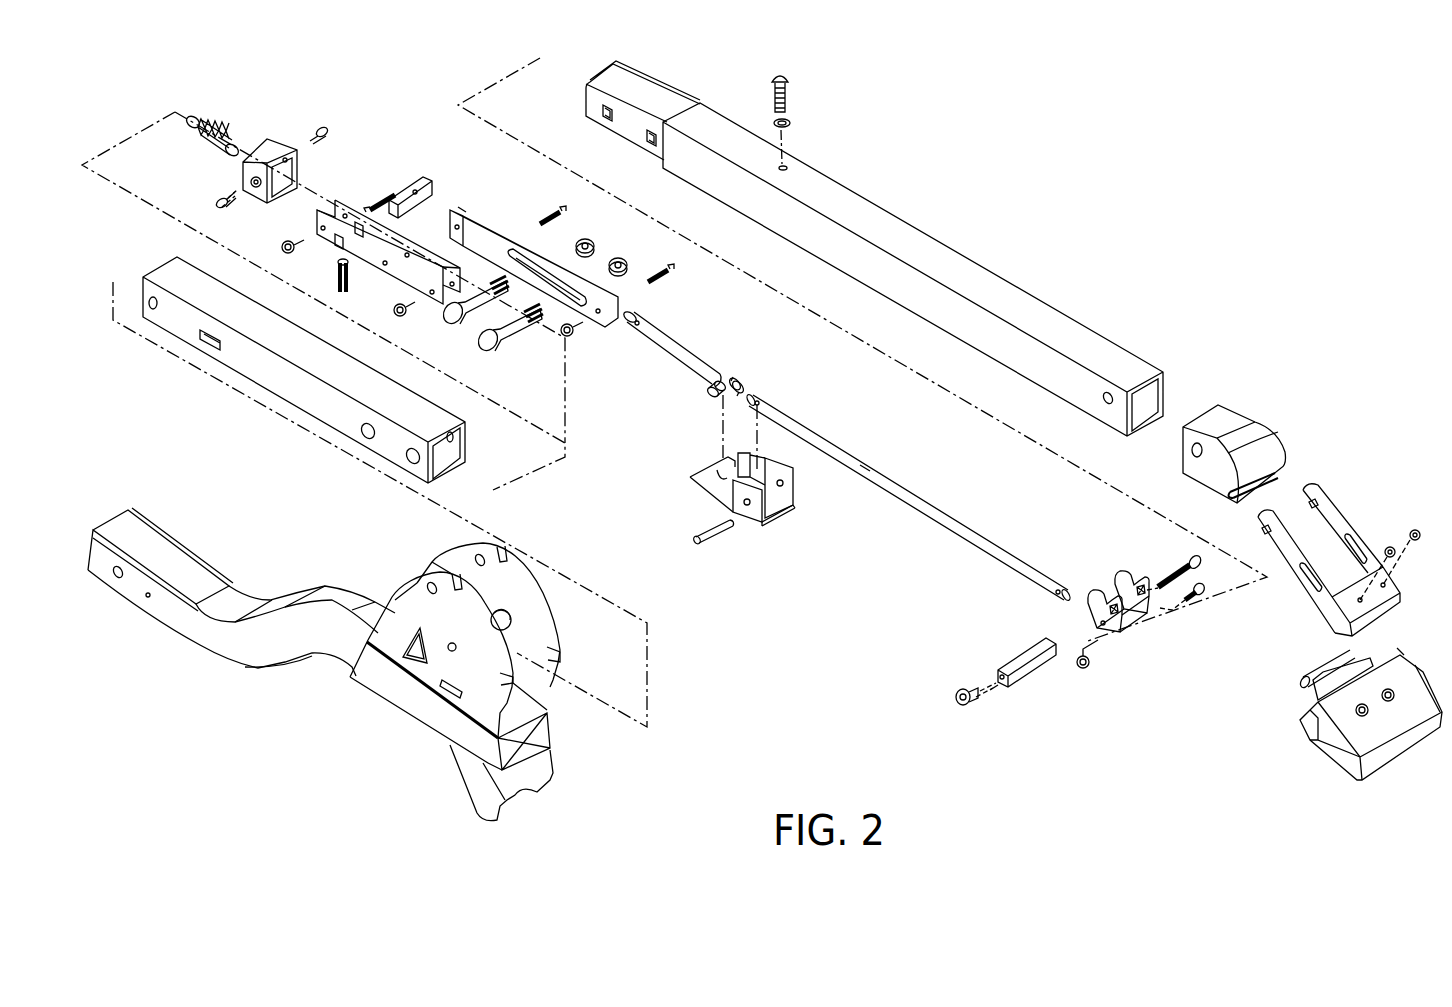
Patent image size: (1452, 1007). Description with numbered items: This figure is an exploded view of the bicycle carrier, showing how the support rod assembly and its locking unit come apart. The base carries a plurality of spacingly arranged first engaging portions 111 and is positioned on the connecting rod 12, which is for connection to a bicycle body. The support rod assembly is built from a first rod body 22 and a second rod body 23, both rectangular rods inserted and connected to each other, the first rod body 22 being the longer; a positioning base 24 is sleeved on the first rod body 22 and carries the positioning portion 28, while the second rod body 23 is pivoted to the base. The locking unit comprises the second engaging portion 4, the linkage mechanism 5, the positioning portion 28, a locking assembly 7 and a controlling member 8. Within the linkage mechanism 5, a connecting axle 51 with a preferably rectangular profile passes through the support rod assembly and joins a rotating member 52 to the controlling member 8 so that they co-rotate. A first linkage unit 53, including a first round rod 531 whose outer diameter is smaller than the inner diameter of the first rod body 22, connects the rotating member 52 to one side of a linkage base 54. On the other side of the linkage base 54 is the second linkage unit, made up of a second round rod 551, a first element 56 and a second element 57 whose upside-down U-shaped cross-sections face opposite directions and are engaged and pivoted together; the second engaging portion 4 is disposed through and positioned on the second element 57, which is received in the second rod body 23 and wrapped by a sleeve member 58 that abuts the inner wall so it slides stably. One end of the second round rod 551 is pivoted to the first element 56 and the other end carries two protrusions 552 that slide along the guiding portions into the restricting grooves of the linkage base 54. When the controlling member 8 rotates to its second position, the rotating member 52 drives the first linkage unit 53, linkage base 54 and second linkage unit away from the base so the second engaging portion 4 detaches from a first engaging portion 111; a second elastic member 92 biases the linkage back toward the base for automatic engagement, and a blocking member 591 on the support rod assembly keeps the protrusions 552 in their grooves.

The second engaging portion 4 is at (432, 188).
The linkage mechanism 5 is at (900, 622).
The locking assembly 7 is at (1290, 675).
The controlling member 8 is at (1400, 642).
The connecting rod 12 is at (270, 643).
The first rod body 22 is at (858, 212).
The second rod body 23 is at (272, 383).
The positioning base 24 is at (1222, 417).
The positioning portion 28 is at (1288, 472).
The connecting axle 51 is at (1020, 682).
The rotating member 52 is at (1130, 642).
The first linkage unit 53 is at (905, 520).
The linkage base 54 is at (705, 502).
The first element 56 is at (478, 222).
The second element 57 is at (348, 222).
The sleeve member 58 is at (272, 150).
The second elastic member 92 is at (207, 135).
The first engaging portions 111 is at (522, 684).
The first round rod 531 is at (902, 488).
The second round rod 551 is at (683, 354).
The protrusions 552 is at (745, 375).
The blocking member 591 is at (790, 88).